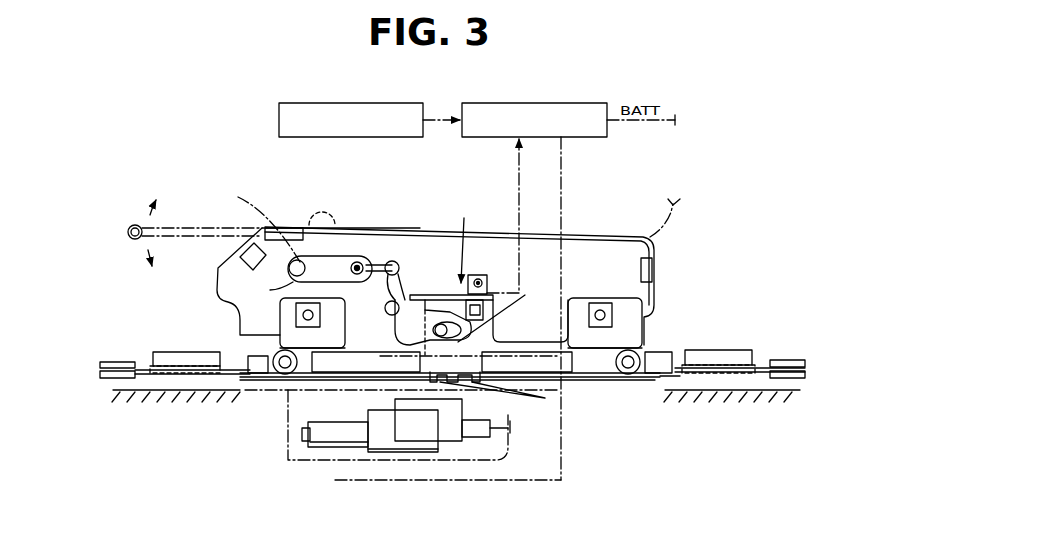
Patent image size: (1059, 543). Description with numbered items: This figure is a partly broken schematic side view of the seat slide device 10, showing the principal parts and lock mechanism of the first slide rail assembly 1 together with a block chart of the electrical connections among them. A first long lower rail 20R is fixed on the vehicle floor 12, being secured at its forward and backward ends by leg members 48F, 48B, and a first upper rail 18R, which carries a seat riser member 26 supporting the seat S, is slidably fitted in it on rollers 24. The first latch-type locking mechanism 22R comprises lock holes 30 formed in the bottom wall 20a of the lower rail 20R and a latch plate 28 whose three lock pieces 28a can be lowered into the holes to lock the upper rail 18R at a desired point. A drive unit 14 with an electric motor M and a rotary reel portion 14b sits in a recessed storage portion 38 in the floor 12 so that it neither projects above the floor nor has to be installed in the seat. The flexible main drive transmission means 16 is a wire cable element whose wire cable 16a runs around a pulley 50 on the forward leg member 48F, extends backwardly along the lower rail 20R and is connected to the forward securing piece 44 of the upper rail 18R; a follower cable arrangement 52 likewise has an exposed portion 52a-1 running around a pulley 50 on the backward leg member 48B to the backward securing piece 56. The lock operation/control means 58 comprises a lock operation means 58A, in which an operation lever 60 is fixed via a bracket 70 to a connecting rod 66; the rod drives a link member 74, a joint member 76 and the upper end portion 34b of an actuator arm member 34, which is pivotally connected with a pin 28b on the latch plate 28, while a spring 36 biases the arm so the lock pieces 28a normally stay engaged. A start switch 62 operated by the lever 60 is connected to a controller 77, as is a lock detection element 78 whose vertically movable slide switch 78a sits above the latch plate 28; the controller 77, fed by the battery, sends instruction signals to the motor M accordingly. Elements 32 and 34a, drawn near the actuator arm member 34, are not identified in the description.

The first slide rail assembly 1 is at (795, 301).
The slide rail device 10 is at (684, 176).
The vehicle floor 12 is at (222, 388).
The drive unit 14 is at (466, 408).
The rotary reel portion 14b is at (455, 438).
The flexible main drive transmission means 16 is at (147, 363).
The wire cable 16a is at (160, 352).
The first upper rail 18R is at (587, 297).
The bottom wall 20a is at (296, 380).
The first long lower rail 20R is at (672, 347).
The first latch-type locking mechanism 22R is at (465, 238).
The rollers 24 is at (300, 353).
The seat riser member 26 is at (586, 235).
The latch plate 28 is at (497, 326).
The lock pieces 28a is at (545, 398).
The pin 28b is at (500, 312).
The lock holes 30 is at (300, 382).
The plate 32 is at (432, 295).
The actuator arm member 34 is at (392, 318).
The lock lever pin 34a is at (440, 336).
The upper end portion 34b is at (401, 290).
The spring 36 is at (385, 306).
The recessed storage portion 38 is at (512, 452).
The forward securing piece 44 is at (258, 355).
The forward leg member 48F is at (158, 388).
The backward leg member 48B is at (745, 388).
The pulley 50 is at (108, 362).
The rail block 52 is at (757, 352).
The exposed portion of follower wire cable 52a-1 is at (713, 350).
The backward securing piece 56 is at (658, 352).
The lock operation/control means 58 is at (280, 204).
The lock operation means 58A is at (372, 226).
The operation lever 60 is at (187, 230).
The start switch 62 is at (357, 103).
The connecting rod 66 is at (270, 289).
The bracket 70 is at (322, 214).
The link member 74 is at (351, 228).
The joint member 76 is at (397, 228).
The controller 77 is at (527, 103).
The lock detection element 78 is at (489, 290).
The slide switch 78a is at (503, 297).
The electric motor M is at (335, 449).
The seat S is at (683, 229).